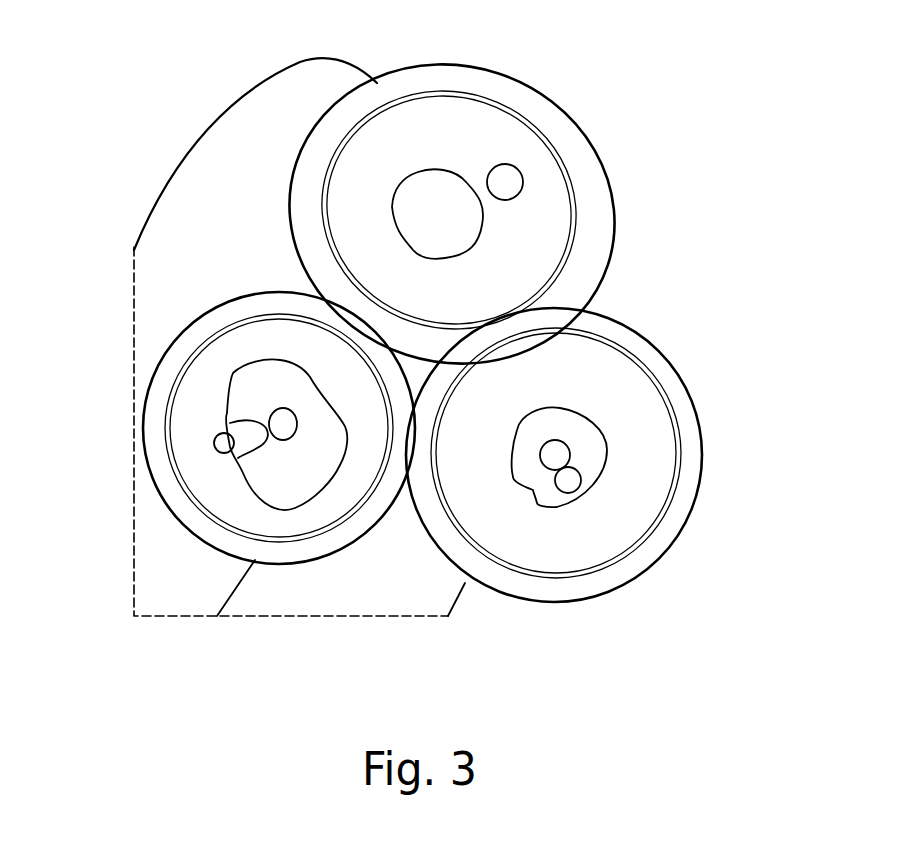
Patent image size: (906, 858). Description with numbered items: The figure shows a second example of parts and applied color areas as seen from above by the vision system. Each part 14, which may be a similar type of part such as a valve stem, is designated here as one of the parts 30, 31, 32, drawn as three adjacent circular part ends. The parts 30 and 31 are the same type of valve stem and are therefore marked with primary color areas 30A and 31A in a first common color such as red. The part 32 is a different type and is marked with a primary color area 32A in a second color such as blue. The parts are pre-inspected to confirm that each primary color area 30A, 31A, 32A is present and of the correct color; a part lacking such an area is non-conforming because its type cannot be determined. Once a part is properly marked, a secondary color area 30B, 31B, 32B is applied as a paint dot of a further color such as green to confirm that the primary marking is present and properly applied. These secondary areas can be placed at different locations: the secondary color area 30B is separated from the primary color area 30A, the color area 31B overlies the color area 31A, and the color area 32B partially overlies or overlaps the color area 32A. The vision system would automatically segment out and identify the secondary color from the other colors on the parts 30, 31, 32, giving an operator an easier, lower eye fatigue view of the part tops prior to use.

The part 14 is at (158, 151).
The part 30 is at (447, 85).
The primary color area 30A is at (462, 178).
The secondary color area 30B is at (508, 178).
The part 31 is at (607, 577).
The primary color area 31A is at (607, 451).
The secondary color area 31B is at (565, 447).
The part 32 is at (183, 502).
The primary color area 32A is at (318, 487).
The secondary color area 32B is at (223, 443).